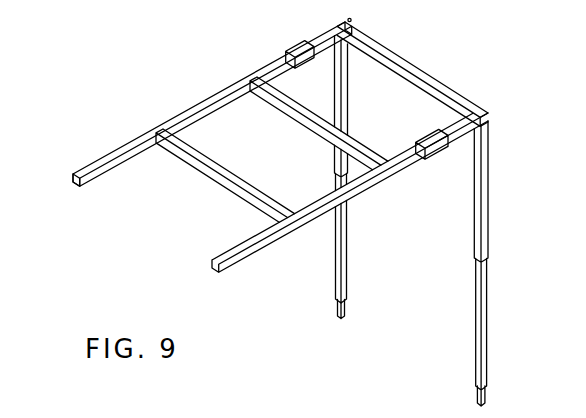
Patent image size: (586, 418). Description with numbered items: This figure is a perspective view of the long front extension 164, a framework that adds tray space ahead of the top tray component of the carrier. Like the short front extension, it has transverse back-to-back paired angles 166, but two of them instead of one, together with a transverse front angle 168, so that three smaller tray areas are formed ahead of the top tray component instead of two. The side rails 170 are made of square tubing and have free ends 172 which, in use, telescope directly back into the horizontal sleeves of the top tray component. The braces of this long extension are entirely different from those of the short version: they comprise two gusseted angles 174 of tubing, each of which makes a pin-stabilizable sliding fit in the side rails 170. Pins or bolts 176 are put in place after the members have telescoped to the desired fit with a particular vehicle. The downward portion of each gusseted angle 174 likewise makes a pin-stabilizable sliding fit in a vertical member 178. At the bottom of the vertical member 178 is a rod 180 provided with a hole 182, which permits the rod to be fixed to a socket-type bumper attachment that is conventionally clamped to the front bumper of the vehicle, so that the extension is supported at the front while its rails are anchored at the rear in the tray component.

The front extension 164 is at (90, 161).
The transverse back-to-back paired angles 166 is at (196, 131).
The transverse front angle 168 is at (424, 70).
The side rails 170 is at (149, 137).
The free ends 172 is at (76, 184).
The gusseted angles 174 is at (351, 20).
The pins or bolts 176 is at (296, 45).
The vertical member 178 is at (487, 324).
The rod 180 is at (342, 306).
The hole 182 is at (337, 318).